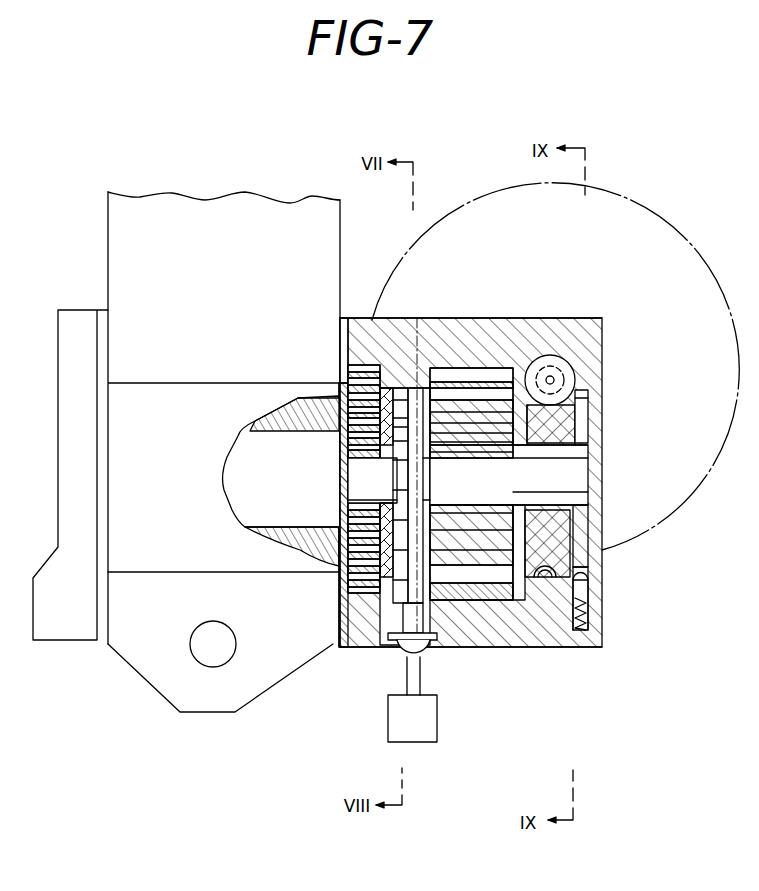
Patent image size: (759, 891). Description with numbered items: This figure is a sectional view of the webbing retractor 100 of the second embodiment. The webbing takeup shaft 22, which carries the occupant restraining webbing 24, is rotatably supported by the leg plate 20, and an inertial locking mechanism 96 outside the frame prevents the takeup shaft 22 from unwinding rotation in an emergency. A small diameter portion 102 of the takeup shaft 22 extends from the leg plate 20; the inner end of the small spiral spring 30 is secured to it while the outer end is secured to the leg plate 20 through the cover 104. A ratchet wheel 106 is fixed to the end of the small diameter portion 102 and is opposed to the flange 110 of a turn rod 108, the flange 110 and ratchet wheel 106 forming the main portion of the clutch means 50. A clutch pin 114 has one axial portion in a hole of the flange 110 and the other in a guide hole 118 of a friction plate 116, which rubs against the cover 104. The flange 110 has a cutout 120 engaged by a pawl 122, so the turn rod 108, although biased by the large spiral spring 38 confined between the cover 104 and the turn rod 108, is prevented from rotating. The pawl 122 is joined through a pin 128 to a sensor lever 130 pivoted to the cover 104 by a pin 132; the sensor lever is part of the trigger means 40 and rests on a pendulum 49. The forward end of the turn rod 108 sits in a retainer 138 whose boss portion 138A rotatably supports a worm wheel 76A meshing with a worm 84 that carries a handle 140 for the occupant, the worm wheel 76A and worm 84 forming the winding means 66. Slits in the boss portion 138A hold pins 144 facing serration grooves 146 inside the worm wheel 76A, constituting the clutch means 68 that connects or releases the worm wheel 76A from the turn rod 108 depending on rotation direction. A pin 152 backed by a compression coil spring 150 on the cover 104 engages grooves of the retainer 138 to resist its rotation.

The webbing retractor 100 is at (290, 178).
The occupant restraining webbing 24 is at (113, 250).
The inertial locking mechanism 96 is at (62, 625).
The friction plate 116 is at (348, 383).
The small diameter portion 102 is at (354, 472).
The webbing takeup shaft 22 is at (268, 517).
The leg plate 20 is at (339, 607).
The small spiral spring 30 is at (344, 360).
The cover 104 is at (540, 318).
The large spiral spring 38 is at (540, 647).
The flange 110 is at (478, 455).
The turn rod 108 is at (575, 473).
The pin 144 is at (577, 453).
The serration grooves 146 is at (592, 483).
The worm 84 is at (572, 370).
The winding means 66 is at (558, 348).
The clutch means 68 is at (604, 420).
The worm wheel 76A is at (565, 412).
The retainer 138 is at (580, 544).
The boss portion 138A is at (590, 516).
The pin 152 is at (583, 592).
The compression coil spring 150 is at (597, 612).
The clutch pin 114 is at (402, 388).
The guide hole 118 is at (398, 388).
The cutout 120 is at (420, 478).
The pawl 122 is at (425, 500).
The clutch means 50 is at (426, 386).
The ratchet wheel 106 is at (440, 385).
The pin 132 is at (395, 640).
The pin 128 is at (440, 636).
The sensor lever 130 is at (440, 655).
The trigger means 40 is at (393, 668).
The pendulum 49 is at (433, 712).
The handle 140 is at (690, 250).